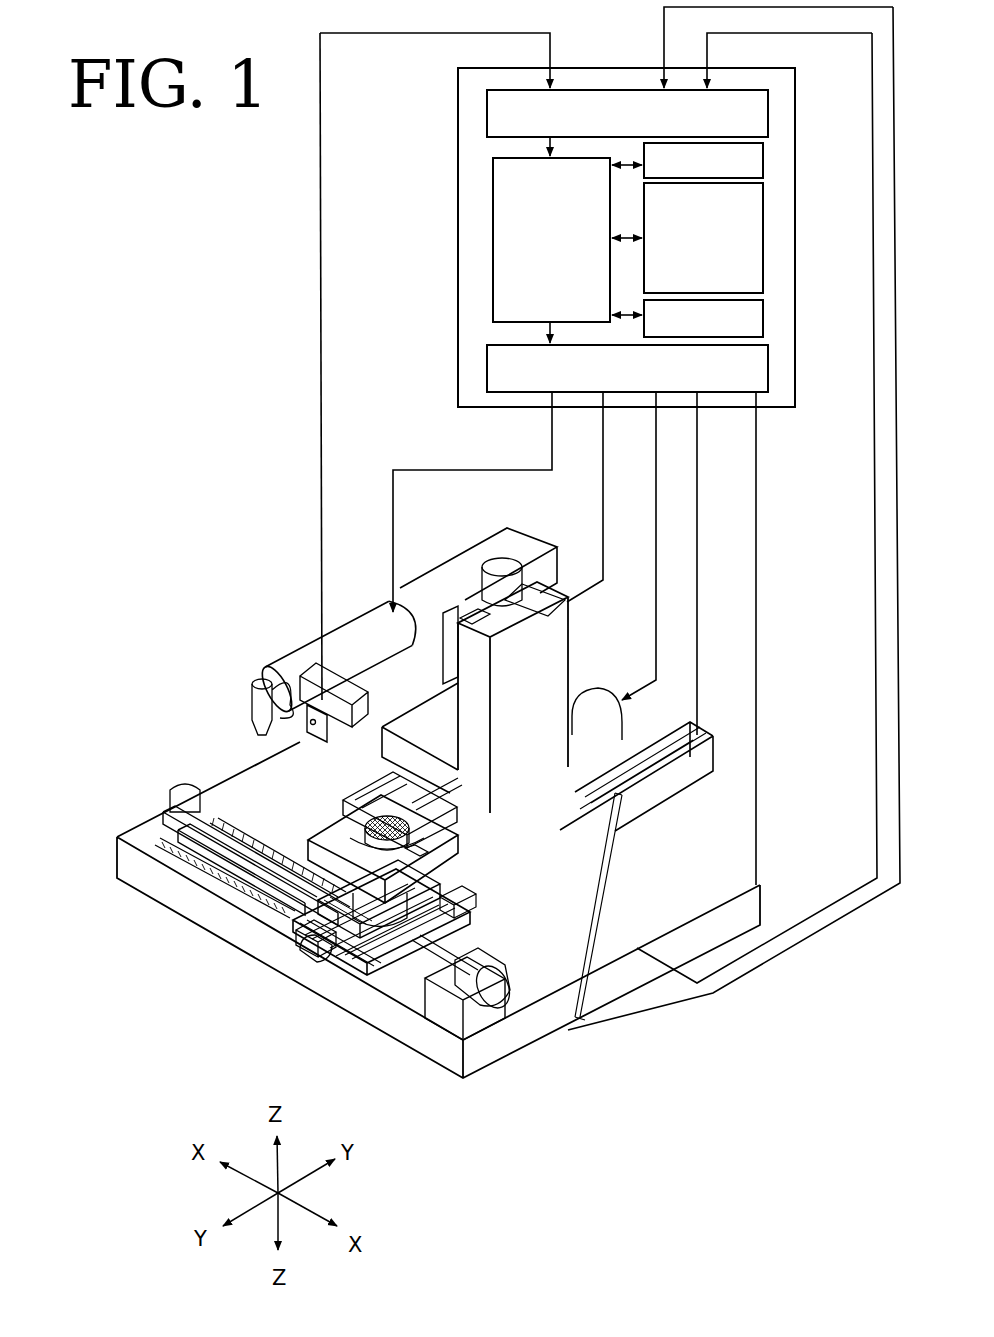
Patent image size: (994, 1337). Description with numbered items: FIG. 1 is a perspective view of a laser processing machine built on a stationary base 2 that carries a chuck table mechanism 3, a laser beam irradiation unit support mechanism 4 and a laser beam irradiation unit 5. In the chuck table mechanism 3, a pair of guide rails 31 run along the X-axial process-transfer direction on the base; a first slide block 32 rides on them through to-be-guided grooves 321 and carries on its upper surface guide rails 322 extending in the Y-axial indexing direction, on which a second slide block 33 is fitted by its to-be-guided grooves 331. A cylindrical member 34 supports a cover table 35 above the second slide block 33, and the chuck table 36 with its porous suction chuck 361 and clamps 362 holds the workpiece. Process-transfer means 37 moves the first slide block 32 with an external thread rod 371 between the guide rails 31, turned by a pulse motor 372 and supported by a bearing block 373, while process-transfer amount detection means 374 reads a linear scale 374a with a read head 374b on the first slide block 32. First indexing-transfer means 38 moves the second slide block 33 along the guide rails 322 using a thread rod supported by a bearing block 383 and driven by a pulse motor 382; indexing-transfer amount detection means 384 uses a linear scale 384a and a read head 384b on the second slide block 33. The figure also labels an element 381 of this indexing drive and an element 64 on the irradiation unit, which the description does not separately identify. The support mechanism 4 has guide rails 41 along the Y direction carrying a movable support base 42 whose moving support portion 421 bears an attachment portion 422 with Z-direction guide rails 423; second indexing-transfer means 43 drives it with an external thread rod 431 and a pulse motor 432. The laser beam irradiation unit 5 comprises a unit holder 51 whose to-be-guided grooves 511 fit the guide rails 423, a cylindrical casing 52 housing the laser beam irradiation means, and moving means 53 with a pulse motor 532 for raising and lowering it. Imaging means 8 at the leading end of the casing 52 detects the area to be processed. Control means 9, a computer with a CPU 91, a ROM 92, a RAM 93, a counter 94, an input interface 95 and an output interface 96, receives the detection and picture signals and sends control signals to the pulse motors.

The stationary base 2 is at (648, 912).
The chuck table mechanism 3 is at (356, 931).
The guide rails 31 is at (215, 795).
The first slide block 32 is at (415, 983).
The to-be-guided grooves 321 is at (570, 968).
The guide rails 322 is at (310, 935).
The second slide block 33 is at (332, 969).
The to-be-guided grooves 331 is at (300, 917).
The cylindrical member 34 is at (397, 1017).
The cover table 35 is at (452, 848).
The chuck table 36 is at (422, 809).
The suction chuck 361 is at (462, 833).
The clamps 362 is at (408, 846).
The process-transfer means 37 is at (347, 931).
The external thread rod 371 is at (215, 870).
The pulse motor 372 is at (540, 1058).
The bearing block 373 is at (185, 792).
The process-transfer amount detection means 374 is at (223, 984).
The linear scale 374a is at (160, 860).
The read head 374b is at (323, 1025).
The first indexing-transfer means 38 is at (421, 961).
The male screw rod 381 is at (295, 920).
The pulse motor 382 is at (470, 880).
The bearing block 383 is at (313, 963).
The indexing-transfer amount detection means 384 is at (559, 961).
The linear scale 384a is at (480, 1010).
The read head 384b is at (585, 900).
The laser beam irradiation unit support mechanism 4 is at (531, 674).
The guide rails 41 is at (376, 784).
The movable support base 42 is at (493, 657).
The moving support portion 421 is at (392, 725).
The attachment portion 422 is at (570, 625).
The guide rails 423 is at (466, 606).
The second indexing-transfer means 43 is at (571, 708).
The external thread rod 431 is at (433, 765).
The pulse motor 432 is at (657, 665).
The laser beam irradiation unit 5 is at (394, 573).
The unit holder 51 is at (468, 553).
The to-be-guided grooves 511 is at (445, 610).
The cylindrical casing 52 is at (352, 630).
The moving means 53 is at (516, 518).
The pulse motor 532 is at (508, 568).
The nozzle 64 is at (248, 700).
The imaging means 8 is at (312, 728).
The control means 9 is at (600, 60).
The central processing unit (CPU) 91 is at (493, 205).
The read-only memory (ROM) 92 is at (763, 172).
The random access memory (RAM) 93 is at (763, 238).
The counter 94 is at (763, 303).
The input interface 95 is at (487, 118).
The output interface 96 is at (487, 372).